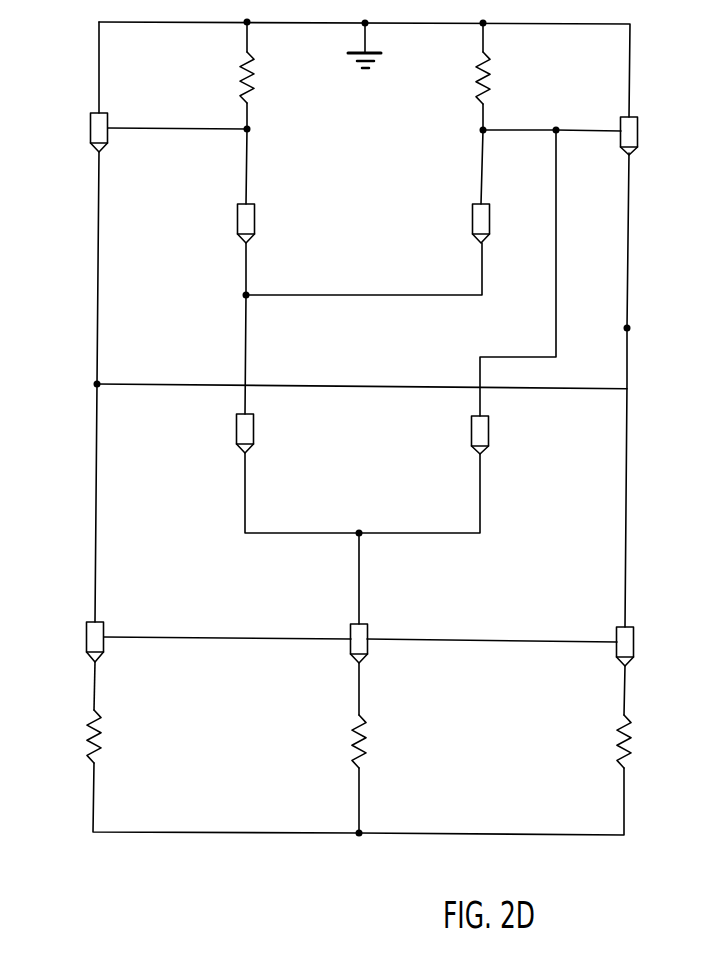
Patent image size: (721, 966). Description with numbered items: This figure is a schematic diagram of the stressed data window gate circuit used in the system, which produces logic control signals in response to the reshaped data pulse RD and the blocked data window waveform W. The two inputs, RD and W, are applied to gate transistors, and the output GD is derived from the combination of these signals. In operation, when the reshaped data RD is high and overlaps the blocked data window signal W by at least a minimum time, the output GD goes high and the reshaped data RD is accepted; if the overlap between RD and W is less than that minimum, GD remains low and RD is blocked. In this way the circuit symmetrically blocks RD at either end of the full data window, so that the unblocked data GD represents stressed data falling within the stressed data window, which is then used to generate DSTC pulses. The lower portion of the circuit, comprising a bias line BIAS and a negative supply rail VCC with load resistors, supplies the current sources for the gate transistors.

The reshaped data pulse RD is at (237, 222).
The blocked data window signal W is at (236, 428).
The unblocked data output GD is at (627, 328).
The bias transistors and bias line BIAS is at (87, 637).
The -VCC supply rail with load resistors VCC is at (359, 833).